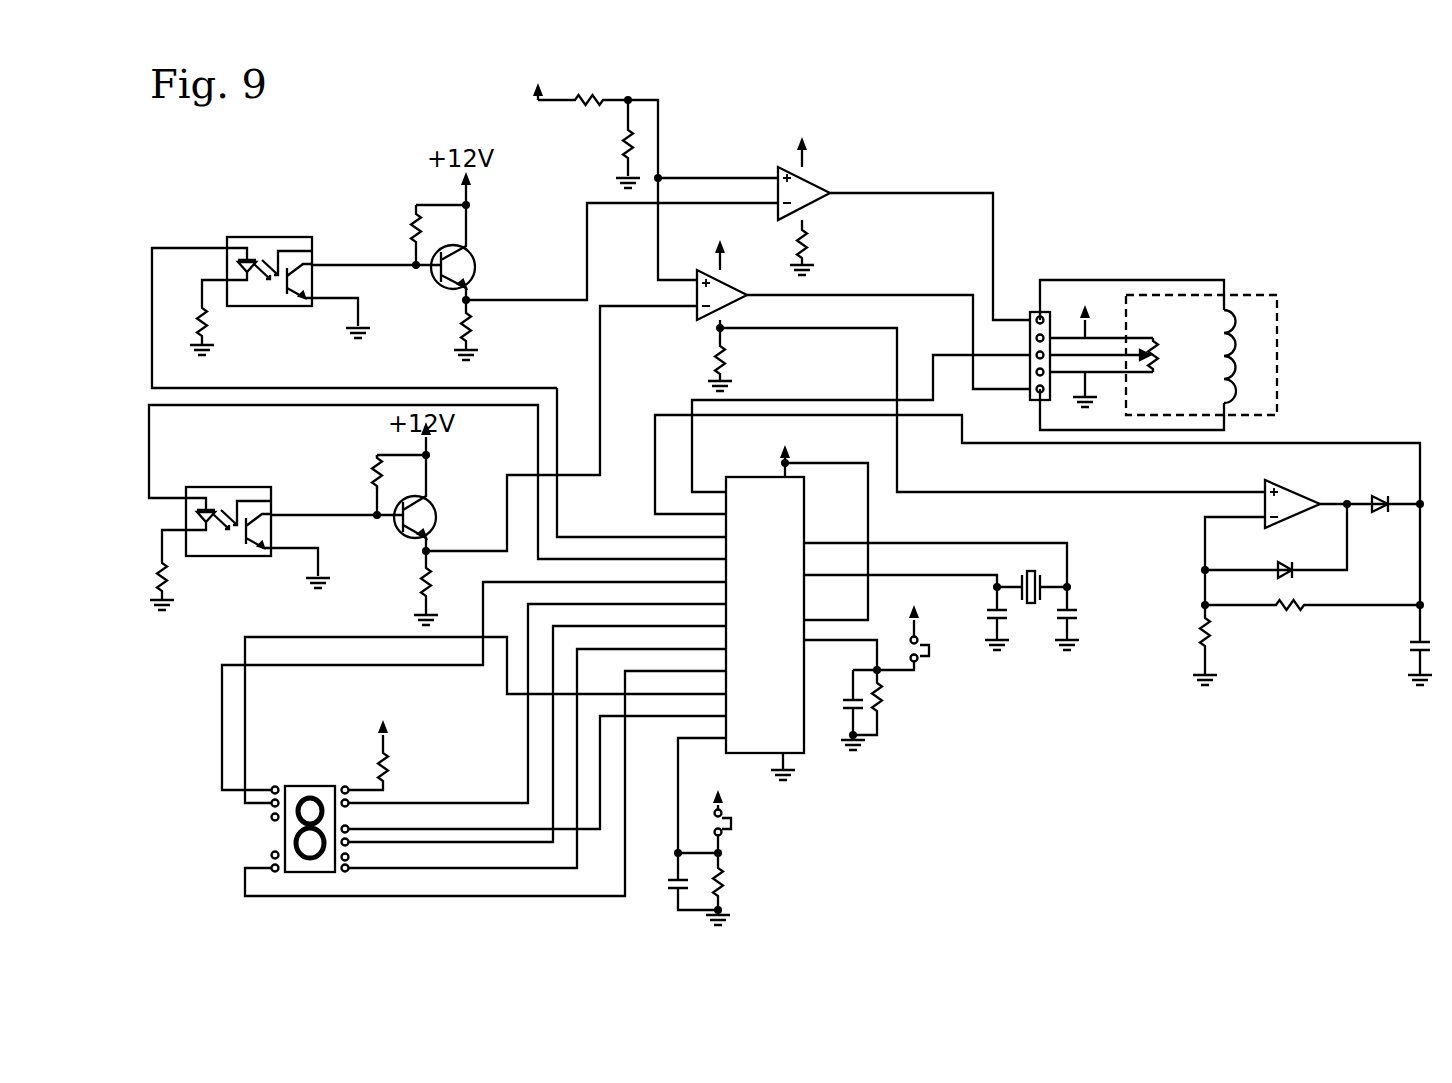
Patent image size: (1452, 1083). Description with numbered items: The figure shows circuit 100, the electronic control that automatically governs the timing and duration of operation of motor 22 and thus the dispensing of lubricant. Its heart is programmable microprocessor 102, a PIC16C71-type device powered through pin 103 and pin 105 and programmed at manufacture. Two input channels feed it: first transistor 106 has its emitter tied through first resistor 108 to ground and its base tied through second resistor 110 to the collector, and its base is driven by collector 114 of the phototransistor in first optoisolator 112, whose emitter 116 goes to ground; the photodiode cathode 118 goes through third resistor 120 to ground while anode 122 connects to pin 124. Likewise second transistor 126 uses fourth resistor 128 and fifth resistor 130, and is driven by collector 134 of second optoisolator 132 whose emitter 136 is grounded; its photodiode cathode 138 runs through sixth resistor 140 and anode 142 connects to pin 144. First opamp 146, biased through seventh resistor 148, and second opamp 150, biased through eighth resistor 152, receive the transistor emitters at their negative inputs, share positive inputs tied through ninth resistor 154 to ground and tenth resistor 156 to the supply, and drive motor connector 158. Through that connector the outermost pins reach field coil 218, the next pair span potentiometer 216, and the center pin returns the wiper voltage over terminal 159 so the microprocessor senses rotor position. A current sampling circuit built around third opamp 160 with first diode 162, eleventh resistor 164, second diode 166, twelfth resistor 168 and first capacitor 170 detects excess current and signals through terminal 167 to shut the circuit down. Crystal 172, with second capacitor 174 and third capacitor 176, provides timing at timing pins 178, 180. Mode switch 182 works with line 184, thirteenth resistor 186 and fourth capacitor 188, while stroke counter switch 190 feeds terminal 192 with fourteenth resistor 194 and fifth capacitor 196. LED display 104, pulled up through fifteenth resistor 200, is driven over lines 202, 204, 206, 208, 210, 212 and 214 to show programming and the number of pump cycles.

The motor 22 is at (1280, 358).
The circuit 100 is at (1204, 214).
The programmable microprocessor 102 is at (795, 755).
The pin 103 is at (792, 470).
The LED display 104 is at (285, 840).
The pin 105 is at (832, 610).
The first transistor 106 is at (488, 262).
The first resistor 108 is at (475, 330).
The second resistor 110 is at (322, 262).
The first optoisolator 112 is at (268, 306).
The collector 114 is at (408, 222).
The emitter 116 is at (318, 297).
The cathode 118 is at (354, 318).
The third resistor 120 is at (207, 325).
The anode 122 is at (185, 247).
The pin 124 is at (560, 500).
The second transistor 126 is at (470, 495).
The fourth resistor 128 is at (420, 590).
The fifth resistor 130 is at (372, 472).
The second optoisolator 132 is at (225, 557).
The collector 134 is at (300, 514).
The emitter 136 is at (278, 548).
The cathode 138 is at (160, 548).
The sixth resistor 140 is at (170, 575).
The anode 142 is at (150, 425).
The pin 144 is at (533, 537).
The first opamp 146 is at (775, 180).
The seventh resistor 148 is at (812, 245).
The second opamp 150 is at (692, 315).
The eighth resistor 152 is at (730, 360).
The ninth resistor 154 is at (622, 142).
The tenth resistor 156 is at (592, 97).
The motor connector 158 is at (1030, 318).
The terminal 159 is at (692, 440).
The third opamp 160 is at (1262, 488).
The first diode 162 is at (1278, 568).
The eleventh resistor 164 is at (1212, 640).
The second diode 166 is at (1372, 500).
The terminal 167 is at (655, 450).
The twelfth resistor 168 is at (1285, 612).
The first capacitor 170 is at (1412, 655).
The crystal 172 is at (1031, 605).
The second capacitor 174 is at (993, 612).
The third capacitor 176 is at (1075, 618).
The timing pin 178 is at (908, 543).
The timing pin 180 is at (908, 575).
The mode switch 182 is at (735, 832).
The line 184 is at (678, 838).
The thirteenth resistor 186 is at (728, 890).
The fourth capacitor 188 is at (672, 898).
The stroke counter switch 190 is at (925, 660).
The terminal 192 is at (870, 645).
The fourteenth resistor 194 is at (885, 712).
The fifth capacitor 196 is at (853, 700).
The fifteenth resistor 200 is at (392, 755).
The line 202 is at (222, 738).
The line 204 is at (398, 803).
The line 206 is at (412, 842).
The line 208 is at (395, 868).
The line 210 is at (430, 896).
The line 212 is at (245, 746).
The line 214 is at (440, 829).
The potentiometer 216 is at (1160, 352).
The field coil 218 is at (1240, 326).